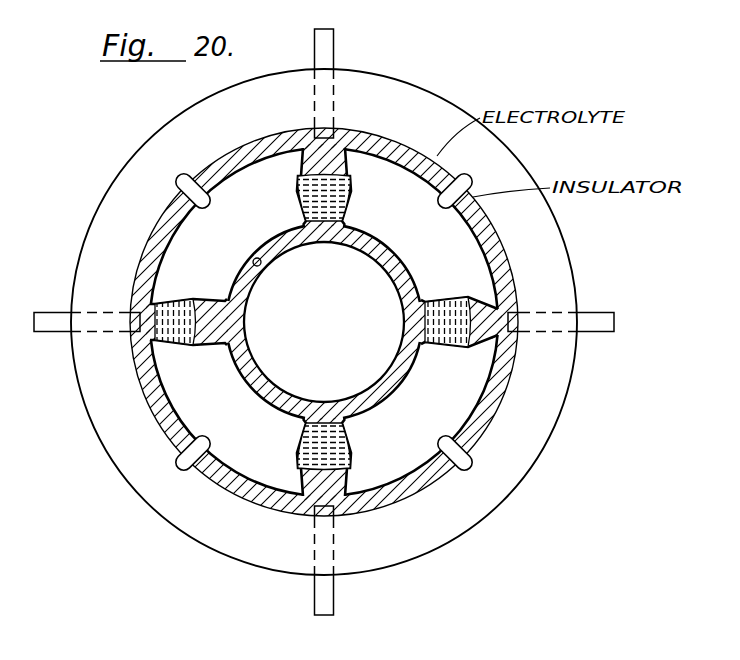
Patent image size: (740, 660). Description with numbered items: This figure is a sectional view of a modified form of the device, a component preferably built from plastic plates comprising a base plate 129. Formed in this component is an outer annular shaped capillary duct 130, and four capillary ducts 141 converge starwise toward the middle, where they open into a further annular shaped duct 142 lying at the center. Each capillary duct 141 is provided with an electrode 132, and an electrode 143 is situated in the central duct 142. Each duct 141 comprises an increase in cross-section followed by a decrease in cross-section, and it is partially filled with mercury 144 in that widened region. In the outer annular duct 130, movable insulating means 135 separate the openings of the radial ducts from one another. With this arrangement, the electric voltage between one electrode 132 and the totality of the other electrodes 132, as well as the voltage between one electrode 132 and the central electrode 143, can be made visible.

The base plate 129 is at (537, 433).
The annular shaped capillary duct 130 is at (499, 249).
The electrode 132 is at (330, 38).
The movable insulating means 135 is at (193, 185).
The capillary ducts 141 is at (478, 310).
The further annular shaped duct 142 is at (383, 271).
The electrode 143 is at (261, 266).
The mercury 144 is at (338, 201).